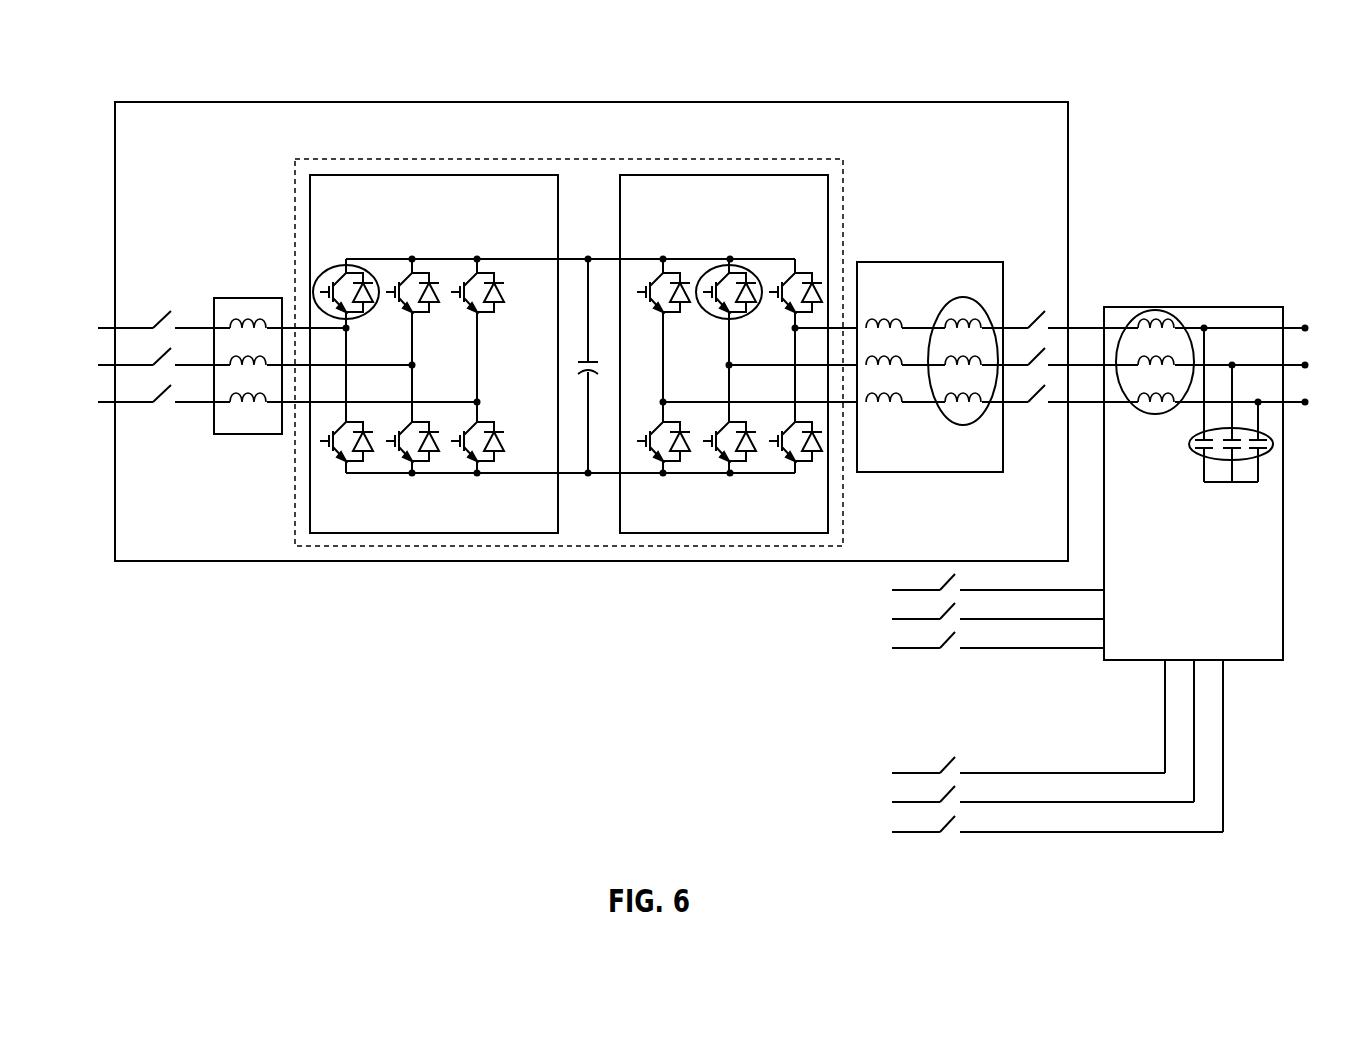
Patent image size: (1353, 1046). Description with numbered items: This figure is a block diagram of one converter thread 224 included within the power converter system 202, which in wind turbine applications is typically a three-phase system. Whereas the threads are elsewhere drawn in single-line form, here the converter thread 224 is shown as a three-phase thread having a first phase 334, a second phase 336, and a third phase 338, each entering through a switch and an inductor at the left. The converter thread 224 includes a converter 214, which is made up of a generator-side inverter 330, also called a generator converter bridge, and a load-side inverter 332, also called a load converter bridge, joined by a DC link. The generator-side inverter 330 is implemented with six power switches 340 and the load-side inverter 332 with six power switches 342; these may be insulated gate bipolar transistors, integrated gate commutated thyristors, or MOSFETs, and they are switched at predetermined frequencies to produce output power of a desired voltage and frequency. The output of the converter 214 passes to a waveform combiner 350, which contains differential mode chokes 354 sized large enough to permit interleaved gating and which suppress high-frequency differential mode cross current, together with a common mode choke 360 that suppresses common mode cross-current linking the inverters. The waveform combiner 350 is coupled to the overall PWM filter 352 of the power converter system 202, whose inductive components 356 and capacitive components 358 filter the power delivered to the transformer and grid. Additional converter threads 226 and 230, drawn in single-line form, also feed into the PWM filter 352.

The power converter system 202 is at (912, 42).
The converter 214 is at (318, 159).
The converter thread 224 is at (1068, 135).
The converter thread 226 is at (790, 618).
The converter thread 230 is at (790, 801).
The generator-side inverter 330 is at (433, 175).
The load-side inverter 332 is at (722, 175).
The first phase 334 is at (128, 328).
The second phase 336 is at (128, 365).
The third phase 338 is at (128, 402).
The power switch 340 is at (338, 268).
The power switch 342 is at (742, 262).
The waveform combiner 350 is at (930, 262).
The PWM filter 352 is at (1195, 307).
The differential mode choke 354 is at (897, 320).
The inductive component 356 is at (1155, 415).
The capacitive component 358 is at (1198, 452).
The common mode choke 360 is at (963, 425).